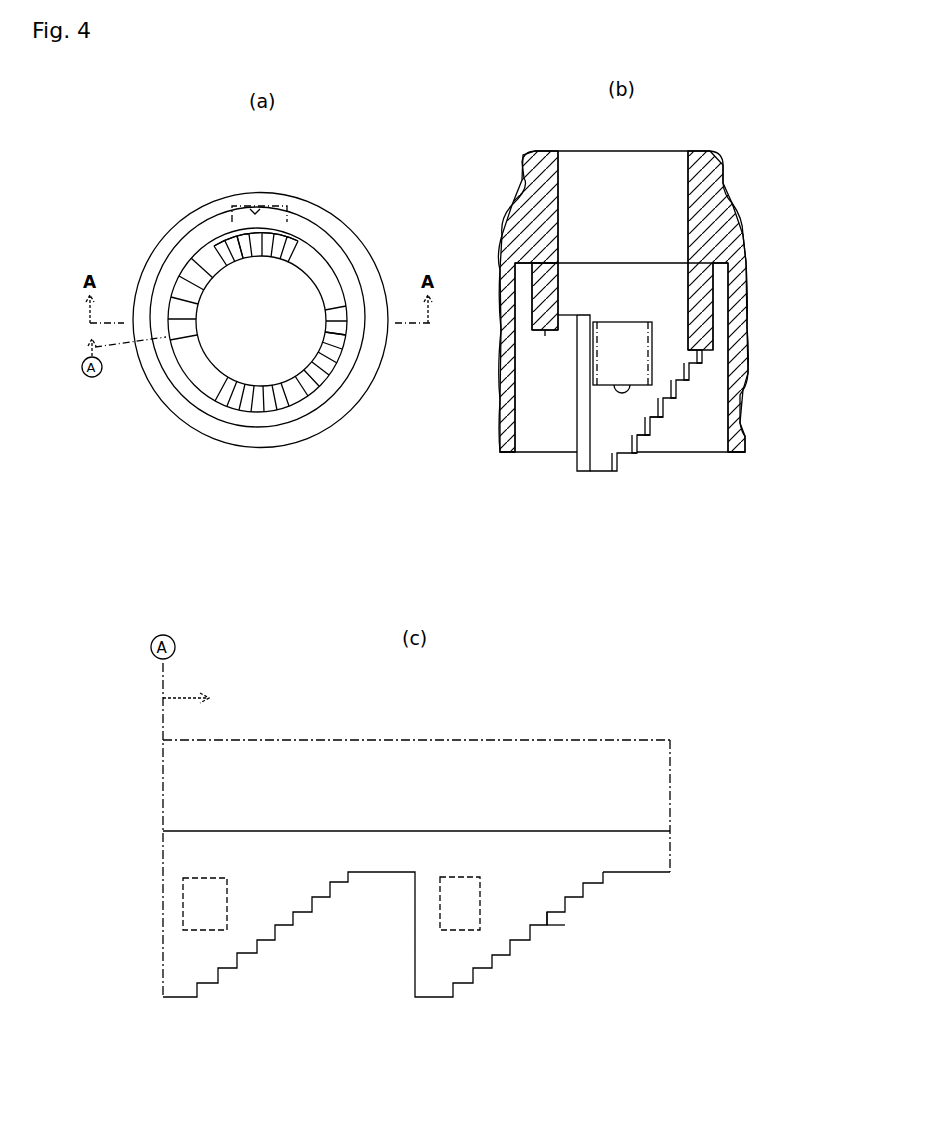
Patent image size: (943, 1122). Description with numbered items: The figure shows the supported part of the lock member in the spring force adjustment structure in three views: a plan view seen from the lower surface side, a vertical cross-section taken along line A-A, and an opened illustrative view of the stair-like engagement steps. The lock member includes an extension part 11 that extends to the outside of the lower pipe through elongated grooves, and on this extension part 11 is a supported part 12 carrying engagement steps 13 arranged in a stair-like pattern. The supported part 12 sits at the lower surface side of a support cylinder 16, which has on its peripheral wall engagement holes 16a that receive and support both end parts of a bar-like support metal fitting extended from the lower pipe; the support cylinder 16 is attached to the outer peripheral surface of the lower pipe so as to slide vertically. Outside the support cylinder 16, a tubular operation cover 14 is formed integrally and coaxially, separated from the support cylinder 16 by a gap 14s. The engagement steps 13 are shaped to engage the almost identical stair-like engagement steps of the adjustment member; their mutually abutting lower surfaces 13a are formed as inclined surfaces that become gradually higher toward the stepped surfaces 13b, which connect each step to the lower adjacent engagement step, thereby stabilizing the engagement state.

The extension part 11 is at (352, 236).
The supported part 12 is at (198, 255).
The engagement steps 13 is at (175, 312).
The lower surfaces 13a is at (221, 252).
The stepped surfaces 13b is at (660, 432).
The operation cover 14 is at (365, 250).
The gap 14s is at (514, 265).
The support cylinder 16 is at (298, 243).
The engagement holes 16a is at (273, 250).